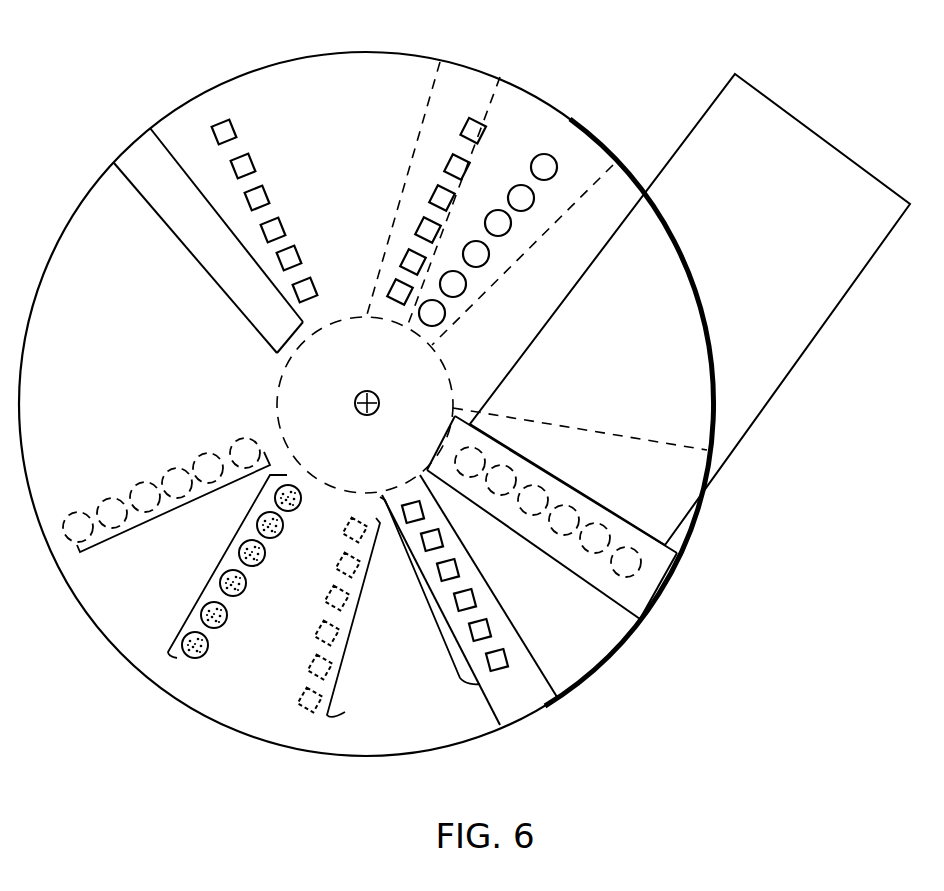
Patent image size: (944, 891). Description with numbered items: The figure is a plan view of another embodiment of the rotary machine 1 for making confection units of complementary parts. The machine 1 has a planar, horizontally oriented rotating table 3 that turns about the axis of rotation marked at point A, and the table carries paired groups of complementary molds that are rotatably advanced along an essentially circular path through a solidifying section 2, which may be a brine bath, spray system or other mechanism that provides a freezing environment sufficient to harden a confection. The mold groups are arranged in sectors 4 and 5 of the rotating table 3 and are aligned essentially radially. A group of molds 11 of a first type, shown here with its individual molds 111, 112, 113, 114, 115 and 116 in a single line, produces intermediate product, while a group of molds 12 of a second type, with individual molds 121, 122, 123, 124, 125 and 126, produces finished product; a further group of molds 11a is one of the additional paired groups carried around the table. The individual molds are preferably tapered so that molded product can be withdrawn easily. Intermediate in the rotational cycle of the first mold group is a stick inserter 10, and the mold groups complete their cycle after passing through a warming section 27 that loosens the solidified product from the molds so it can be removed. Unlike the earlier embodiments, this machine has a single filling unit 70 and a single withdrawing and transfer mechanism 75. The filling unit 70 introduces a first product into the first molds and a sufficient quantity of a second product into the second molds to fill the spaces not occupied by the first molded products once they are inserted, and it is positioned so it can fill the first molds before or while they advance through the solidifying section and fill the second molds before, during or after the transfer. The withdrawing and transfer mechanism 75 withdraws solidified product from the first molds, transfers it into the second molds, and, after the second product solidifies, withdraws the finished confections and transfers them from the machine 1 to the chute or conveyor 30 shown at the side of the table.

The machine 1 is at (283, 38).
The solidifying section 2 is at (125, 342).
The rotating table 3 is at (426, 64).
The sector 4 is at (568, 132).
The sector 5 is at (497, 90).
The stick inserter 10 is at (169, 228).
The group of molds 11 is at (357, 614).
The group of molds 11a is at (441, 633).
The group of molds 12 is at (157, 522).
The warming section 27 is at (550, 635).
The chute or conveyor 30 is at (753, 227).
The filling unit 70 is at (537, 698).
The withdrawing and transfer mechanism 75 is at (640, 600).
The axis of rotation A is at (366, 392).
The individual mold 111 is at (350, 523).
The individual mold 112 is at (338, 560).
The individual mold 113 is at (327, 590).
The individual mold 114 is at (318, 623).
The individual mold 115 is at (310, 660).
The individual mold 116 is at (302, 690).
The individual mold 121 is at (260, 440).
The individual mold 122 is at (214, 453).
The individual mold 123 is at (184, 470).
The individual mold 124 is at (141, 483).
The individual mold 125 is at (107, 498).
The individual mold 126 is at (66, 517).